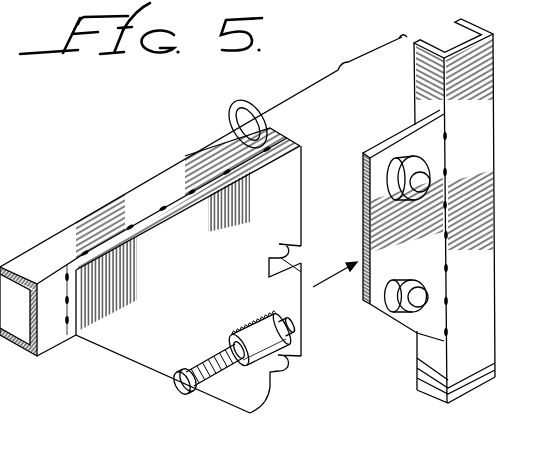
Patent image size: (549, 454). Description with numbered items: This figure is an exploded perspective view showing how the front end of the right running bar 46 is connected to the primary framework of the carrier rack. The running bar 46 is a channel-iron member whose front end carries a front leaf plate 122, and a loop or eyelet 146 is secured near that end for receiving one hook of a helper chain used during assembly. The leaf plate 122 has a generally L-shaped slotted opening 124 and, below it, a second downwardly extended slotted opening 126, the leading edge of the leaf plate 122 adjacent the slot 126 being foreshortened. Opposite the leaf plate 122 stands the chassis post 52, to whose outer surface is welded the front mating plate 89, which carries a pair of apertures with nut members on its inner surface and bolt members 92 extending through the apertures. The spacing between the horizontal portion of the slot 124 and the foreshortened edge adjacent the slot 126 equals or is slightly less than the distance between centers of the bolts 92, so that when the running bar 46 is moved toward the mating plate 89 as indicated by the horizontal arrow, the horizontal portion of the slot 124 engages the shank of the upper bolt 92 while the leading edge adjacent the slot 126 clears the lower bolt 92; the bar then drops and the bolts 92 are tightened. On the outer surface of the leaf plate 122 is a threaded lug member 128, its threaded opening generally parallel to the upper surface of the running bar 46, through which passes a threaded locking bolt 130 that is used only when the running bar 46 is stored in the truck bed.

The right running bar 46 is at (97, 207).
The chassis post 52 is at (486, 224).
The front mating plate 89 is at (392, 137).
The bolt members 92 is at (427, 180).
The front leaf plate 122 is at (124, 343).
The L-shaped slotted opening 124 is at (283, 247).
The second downwardly extended slotted opening 126 is at (283, 388).
The threaded lug member 128 is at (252, 323).
The threaded locking bolt 130 is at (220, 382).
The loop or eyelet 146 is at (231, 114).